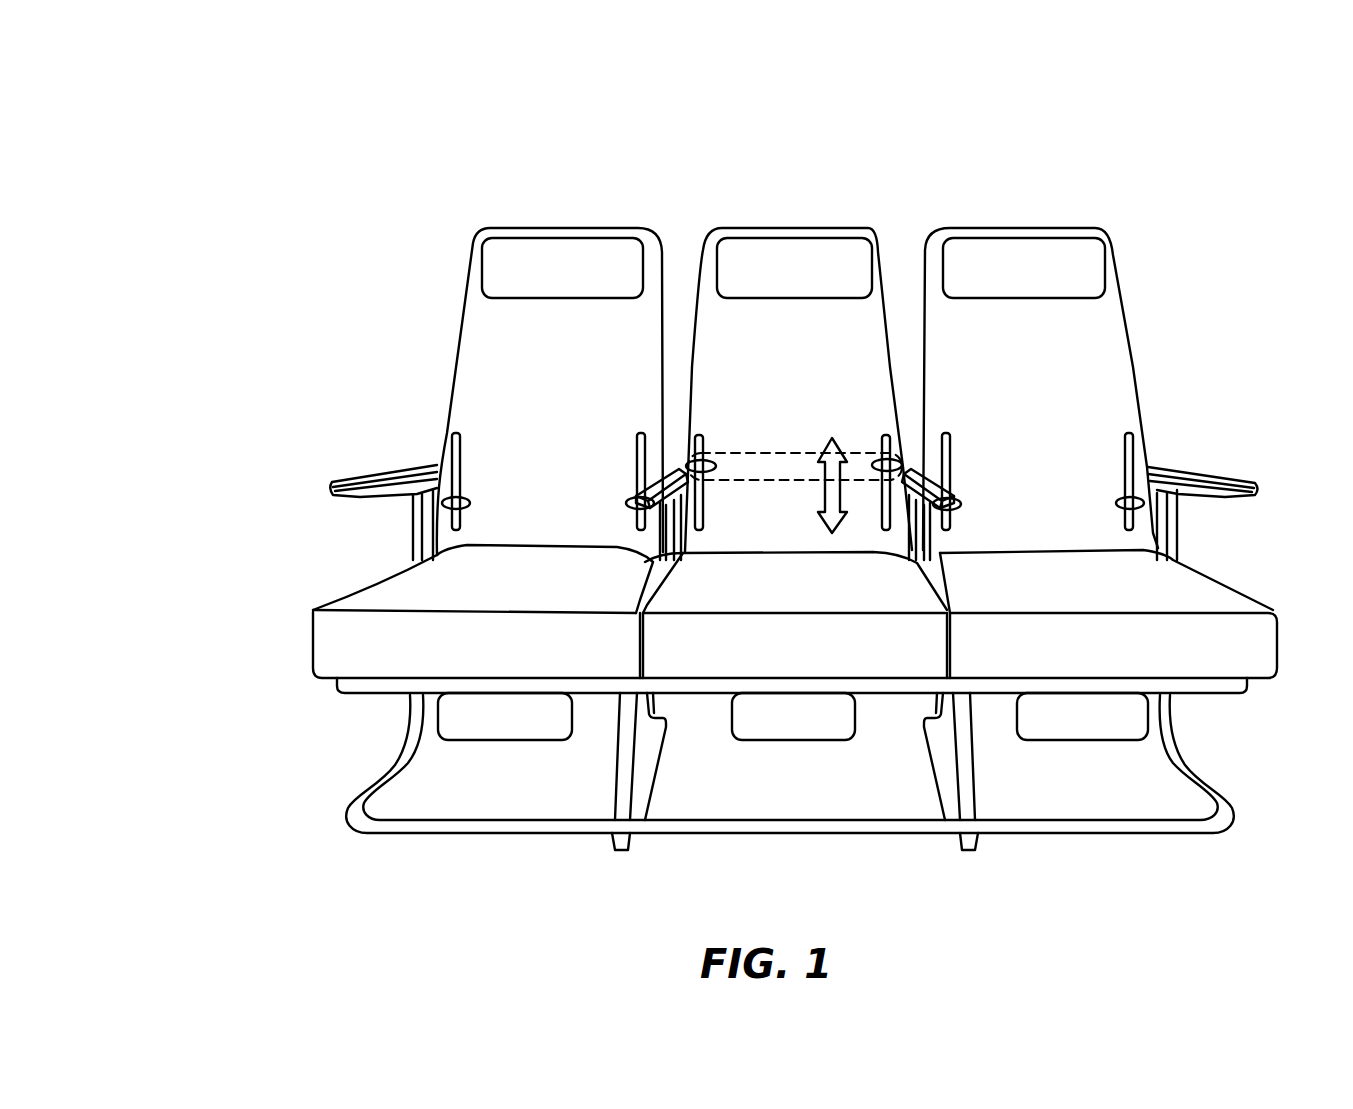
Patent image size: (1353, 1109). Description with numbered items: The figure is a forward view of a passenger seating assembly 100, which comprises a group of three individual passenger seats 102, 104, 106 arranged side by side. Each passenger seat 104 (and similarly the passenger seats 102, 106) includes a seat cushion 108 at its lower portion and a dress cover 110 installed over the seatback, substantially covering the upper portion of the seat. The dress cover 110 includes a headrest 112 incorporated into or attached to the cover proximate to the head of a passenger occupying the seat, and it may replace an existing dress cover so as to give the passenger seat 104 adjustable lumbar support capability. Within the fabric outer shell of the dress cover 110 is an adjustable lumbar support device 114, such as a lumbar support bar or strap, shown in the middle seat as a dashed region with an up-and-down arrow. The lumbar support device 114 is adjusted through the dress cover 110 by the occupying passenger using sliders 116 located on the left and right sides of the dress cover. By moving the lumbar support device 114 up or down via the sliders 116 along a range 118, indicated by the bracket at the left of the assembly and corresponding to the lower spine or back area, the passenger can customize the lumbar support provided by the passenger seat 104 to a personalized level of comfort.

The passenger seating assembly 100 is at (170, 136).
The passenger seat 102 is at (493, 438).
The passenger seat 104 is at (875, 337).
The passenger seat 106 is at (1073, 363).
The seat cushion 108 is at (380, 637).
The dress cover 110 is at (1067, 512).
The headrest 112 is at (1057, 263).
The adjustable lumbar support device 114 is at (772, 472).
The sliders 116 is at (690, 460).
The range 118 is at (287, 532).